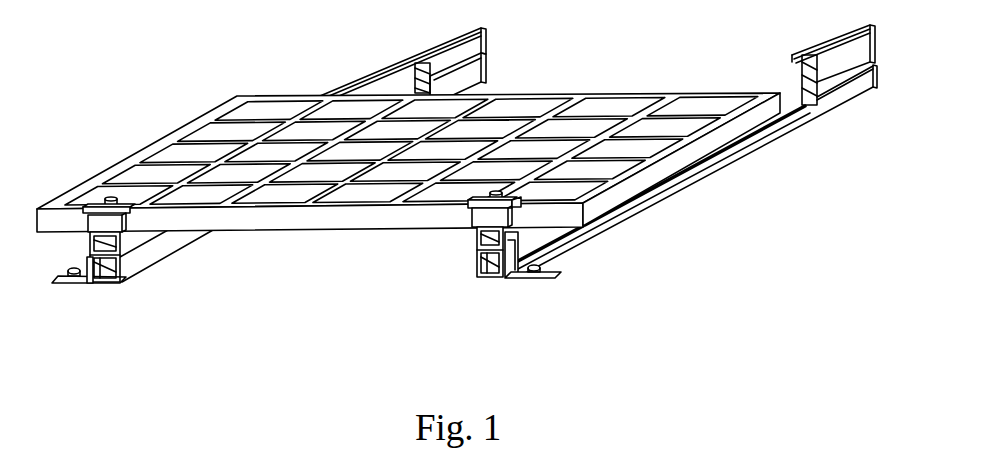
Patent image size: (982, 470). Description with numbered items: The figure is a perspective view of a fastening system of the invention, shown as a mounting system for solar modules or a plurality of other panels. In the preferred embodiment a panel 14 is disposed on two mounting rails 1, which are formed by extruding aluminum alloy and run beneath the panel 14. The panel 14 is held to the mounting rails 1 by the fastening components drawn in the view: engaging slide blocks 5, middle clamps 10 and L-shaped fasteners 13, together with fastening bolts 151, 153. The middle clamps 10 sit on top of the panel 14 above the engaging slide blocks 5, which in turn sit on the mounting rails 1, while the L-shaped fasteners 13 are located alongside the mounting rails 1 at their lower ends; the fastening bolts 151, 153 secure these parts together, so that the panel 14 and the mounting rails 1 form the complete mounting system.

The mounting rail 1 is at (697, 151).
The engaging slide block 5 is at (465, 275).
The middle clamp 10 is at (449, 229).
The L-shaped fastener 13 is at (562, 262).
The panel 14 is at (408, 141).
The fastening bolt 151 is at (603, 214).
The fastening bolt 153 is at (544, 290).